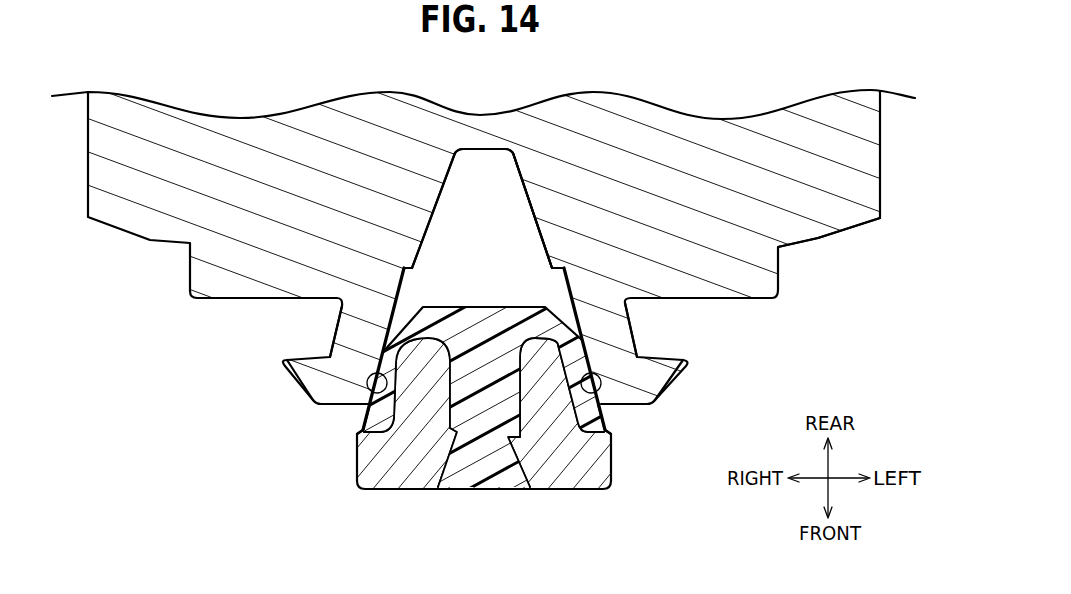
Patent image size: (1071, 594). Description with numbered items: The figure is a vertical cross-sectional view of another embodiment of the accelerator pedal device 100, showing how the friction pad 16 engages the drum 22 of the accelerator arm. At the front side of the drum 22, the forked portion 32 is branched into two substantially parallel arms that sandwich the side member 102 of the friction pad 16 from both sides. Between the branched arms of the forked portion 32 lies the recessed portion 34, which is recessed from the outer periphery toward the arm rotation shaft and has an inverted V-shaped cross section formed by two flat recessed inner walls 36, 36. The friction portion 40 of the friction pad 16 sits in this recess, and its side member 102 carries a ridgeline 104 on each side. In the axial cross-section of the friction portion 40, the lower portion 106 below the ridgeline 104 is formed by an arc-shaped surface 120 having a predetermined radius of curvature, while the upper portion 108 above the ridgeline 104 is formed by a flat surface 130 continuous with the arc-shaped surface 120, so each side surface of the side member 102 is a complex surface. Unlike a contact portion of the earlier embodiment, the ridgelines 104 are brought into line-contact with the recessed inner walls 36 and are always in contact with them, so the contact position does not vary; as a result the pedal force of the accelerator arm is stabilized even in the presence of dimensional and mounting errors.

The accelerator pedal device 100 is at (698, 82).
The drum 22 is at (893, 200).
The recessed portion 34 is at (497, 201).
The friction portion 40 is at (525, 288).
The friction pad 16 is at (505, 518).
The side member 102 is at (472, 299).
The upper portion 108 is at (392, 304).
The flat surface 130 is at (596, 307).
The ridgeline 104 is at (385, 350).
The forked portion 32 is at (302, 385).
The recessed inner wall 36 is at (367, 388).
The lower portion 106 is at (361, 425).
The arc-shaped surface 120 is at (607, 412).